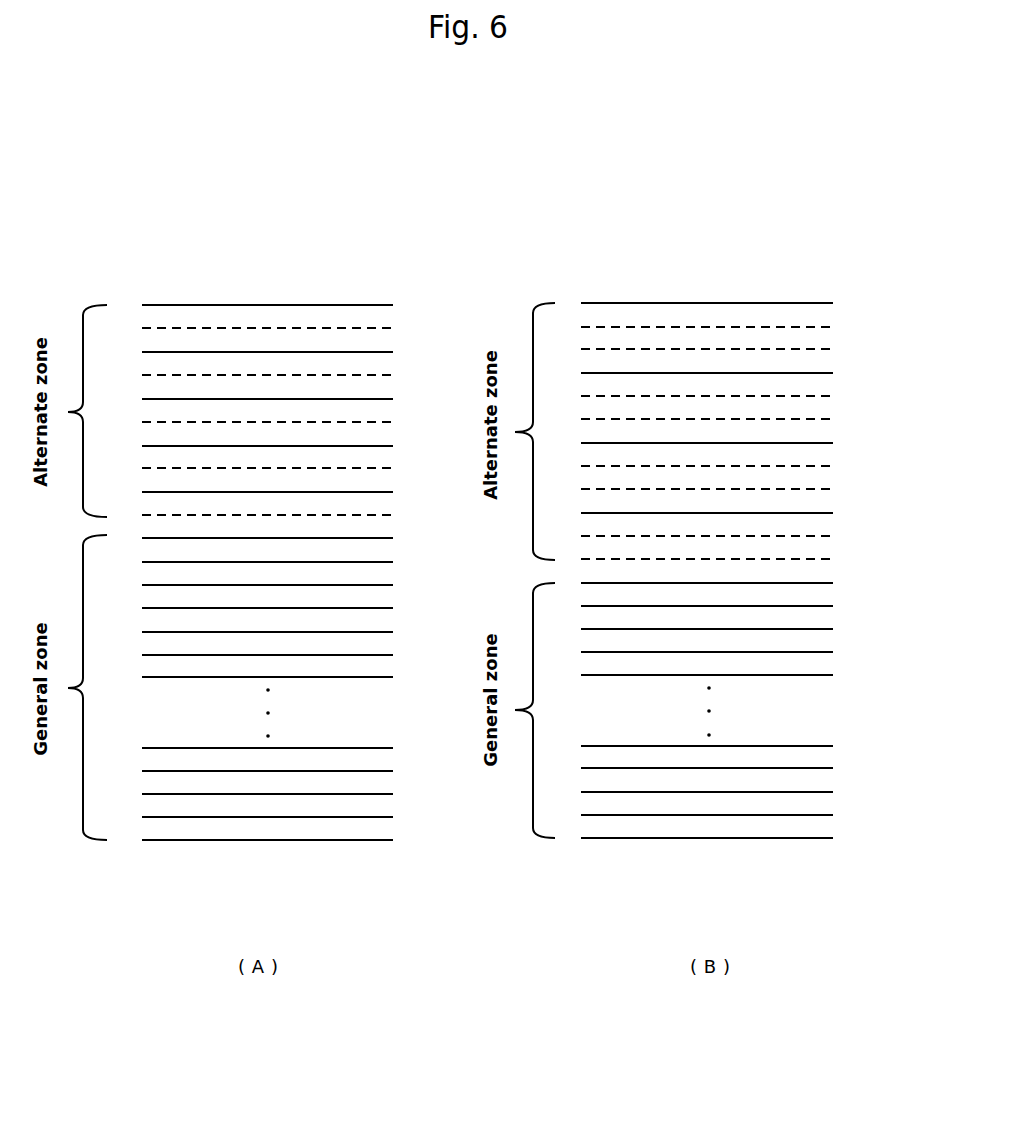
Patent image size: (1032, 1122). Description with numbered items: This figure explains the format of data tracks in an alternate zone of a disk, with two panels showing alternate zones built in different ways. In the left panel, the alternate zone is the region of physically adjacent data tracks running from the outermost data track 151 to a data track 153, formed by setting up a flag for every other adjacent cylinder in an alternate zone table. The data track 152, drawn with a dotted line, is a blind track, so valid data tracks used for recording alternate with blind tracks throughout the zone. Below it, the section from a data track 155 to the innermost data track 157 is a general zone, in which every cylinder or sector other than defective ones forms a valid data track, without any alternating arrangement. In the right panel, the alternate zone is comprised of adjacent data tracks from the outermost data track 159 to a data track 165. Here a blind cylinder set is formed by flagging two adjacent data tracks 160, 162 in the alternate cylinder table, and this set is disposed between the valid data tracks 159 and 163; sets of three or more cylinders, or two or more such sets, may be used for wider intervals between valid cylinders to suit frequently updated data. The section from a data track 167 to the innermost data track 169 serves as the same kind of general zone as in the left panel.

The outermost data track 151 is at (318, 303).
The blind track 152 is at (358, 328).
The data track 153 is at (362, 515).
The data track 155 is at (343, 538).
The innermost data track 157 is at (380, 840).
The outermost data track 159 is at (773, 302).
The blind data track 160 is at (808, 327).
The blind data track 162 is at (828, 349).
The valid data track 163 is at (813, 373).
The data track 165 is at (833, 559).
The data track 167 is at (802, 582).
The innermost data track 169 is at (818, 835).